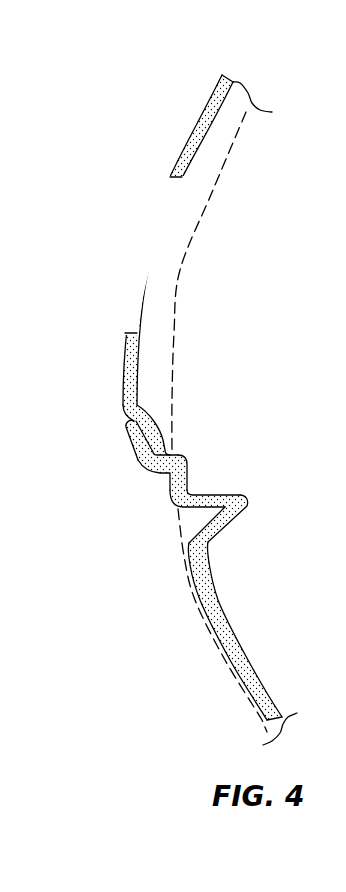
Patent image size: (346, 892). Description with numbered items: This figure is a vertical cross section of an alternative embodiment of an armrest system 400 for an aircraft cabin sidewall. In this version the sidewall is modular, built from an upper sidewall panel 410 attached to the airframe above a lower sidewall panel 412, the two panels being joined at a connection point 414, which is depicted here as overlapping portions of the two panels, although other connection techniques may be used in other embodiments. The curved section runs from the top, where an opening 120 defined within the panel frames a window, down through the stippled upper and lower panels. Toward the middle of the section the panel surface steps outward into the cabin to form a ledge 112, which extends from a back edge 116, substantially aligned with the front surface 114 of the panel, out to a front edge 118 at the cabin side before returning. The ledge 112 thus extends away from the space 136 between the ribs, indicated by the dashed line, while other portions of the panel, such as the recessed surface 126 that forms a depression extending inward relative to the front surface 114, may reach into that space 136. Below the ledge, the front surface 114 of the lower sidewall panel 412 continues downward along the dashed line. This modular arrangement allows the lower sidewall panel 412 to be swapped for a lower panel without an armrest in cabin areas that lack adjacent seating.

The armrest system 400 is at (118, 90).
The space between the ribs 136 is at (202, 168).
The opening 120 is at (160, 259).
The recessed surface 126 is at (140, 360).
The upper sidewall panel 410 is at (125, 378).
The connection point 414 is at (129, 417).
The back edge 116 is at (187, 462).
The ledge 112 is at (229, 480).
The front edge 118 is at (249, 503).
The front surface 114 is at (225, 598).
The lower sidewall panel 412 is at (192, 585).